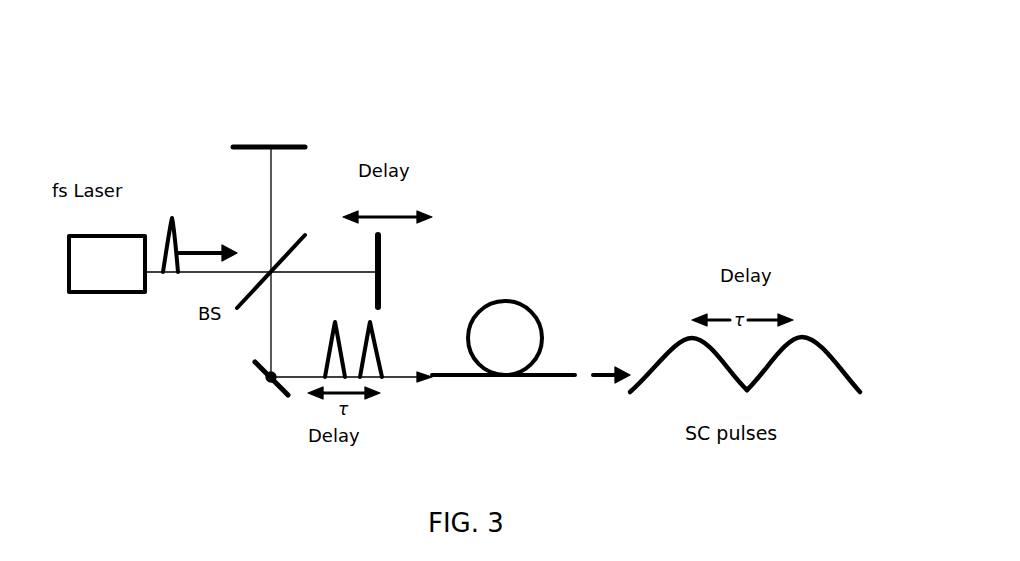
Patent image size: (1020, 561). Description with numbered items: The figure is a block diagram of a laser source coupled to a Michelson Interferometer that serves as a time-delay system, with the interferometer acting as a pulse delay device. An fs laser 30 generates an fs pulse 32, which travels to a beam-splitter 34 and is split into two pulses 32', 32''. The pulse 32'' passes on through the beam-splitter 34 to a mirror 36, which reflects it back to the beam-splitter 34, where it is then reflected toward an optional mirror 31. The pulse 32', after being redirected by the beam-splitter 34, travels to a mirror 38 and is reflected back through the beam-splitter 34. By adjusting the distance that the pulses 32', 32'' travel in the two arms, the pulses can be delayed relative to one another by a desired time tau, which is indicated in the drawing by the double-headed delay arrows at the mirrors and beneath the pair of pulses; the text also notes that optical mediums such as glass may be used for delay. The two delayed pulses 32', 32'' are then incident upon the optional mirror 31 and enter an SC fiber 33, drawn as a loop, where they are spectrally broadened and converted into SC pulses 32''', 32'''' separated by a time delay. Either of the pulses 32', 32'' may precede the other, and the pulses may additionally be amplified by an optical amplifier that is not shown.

The fs laser 30 is at (105, 292).
The optional mirror 31 is at (285, 397).
The fs pulse 32 is at (200, 234).
The pulse 32' is at (315, 257).
The pulse 32'' is at (342, 306).
The SC pulse 32''' is at (671, 330).
The SC pulse 32'''' is at (827, 324).
The SC fiber 33 is at (532, 312).
The beam-splitter 34 is at (250, 302).
The mirror 36 is at (382, 298).
The mirror 38 is at (285, 143).